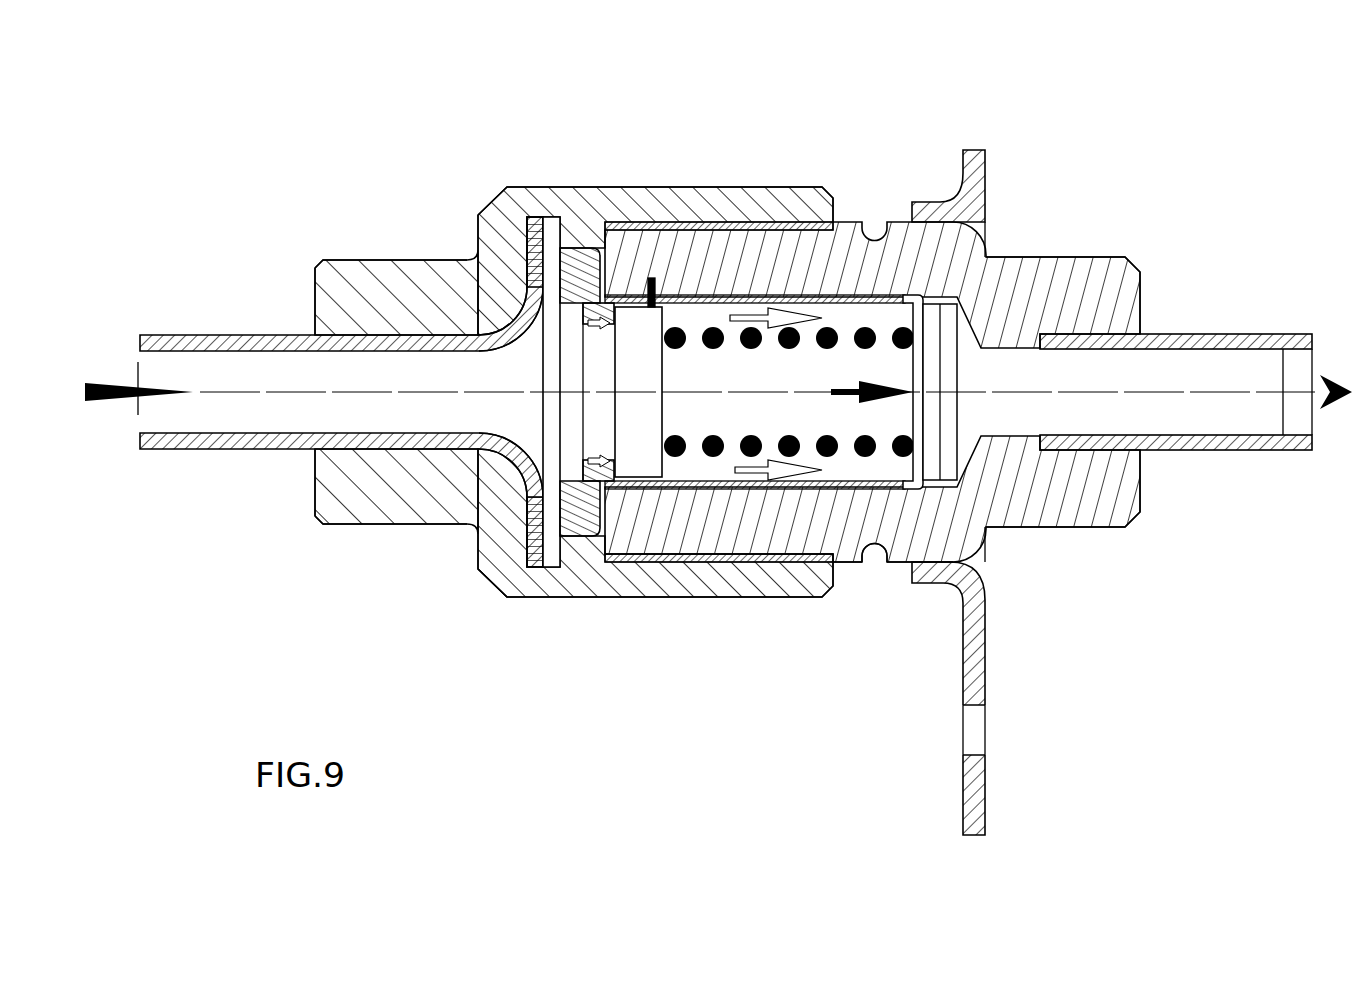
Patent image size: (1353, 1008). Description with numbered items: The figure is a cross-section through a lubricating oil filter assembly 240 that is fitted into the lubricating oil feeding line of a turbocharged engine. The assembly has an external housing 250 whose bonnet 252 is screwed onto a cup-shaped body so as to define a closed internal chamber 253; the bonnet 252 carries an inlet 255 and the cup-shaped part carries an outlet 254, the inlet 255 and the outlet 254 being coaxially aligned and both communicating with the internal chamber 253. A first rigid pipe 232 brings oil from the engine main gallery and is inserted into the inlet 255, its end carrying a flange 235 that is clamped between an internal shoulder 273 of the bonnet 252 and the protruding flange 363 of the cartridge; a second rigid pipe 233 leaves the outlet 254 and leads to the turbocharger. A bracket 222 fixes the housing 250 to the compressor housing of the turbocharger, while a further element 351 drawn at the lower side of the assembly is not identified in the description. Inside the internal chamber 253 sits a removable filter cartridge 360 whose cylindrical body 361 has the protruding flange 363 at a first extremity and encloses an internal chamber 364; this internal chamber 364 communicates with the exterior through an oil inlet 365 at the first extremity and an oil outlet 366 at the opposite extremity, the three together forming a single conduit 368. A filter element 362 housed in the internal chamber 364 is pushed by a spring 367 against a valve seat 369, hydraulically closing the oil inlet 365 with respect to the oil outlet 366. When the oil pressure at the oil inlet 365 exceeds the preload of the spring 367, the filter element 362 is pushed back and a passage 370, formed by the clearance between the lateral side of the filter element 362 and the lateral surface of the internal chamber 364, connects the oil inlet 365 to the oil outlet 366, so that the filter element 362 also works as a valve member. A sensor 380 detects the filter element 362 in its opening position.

The bracket 222 is at (983, 167).
The first rigid pipe 232 is at (228, 457).
The second rigid pipe 233 is at (1197, 333).
The flange 235 is at (535, 215).
The lubricating oil filter assembly 240 is at (290, 236).
The housing 250 is at (598, 180).
The bonnet 252 is at (597, 588).
The internal chamber 253 is at (930, 443).
The outlet 254 is at (1113, 457).
The inlet 255 is at (352, 320).
The internal shoulder 273 is at (518, 250).
The lower mounting flange 351 is at (935, 585).
The removable filter cartridge 360 is at (766, 495).
The body 361 is at (728, 300).
The filter element 362 is at (637, 327).
The protruding flange 363 is at (598, 565).
The internal chamber 364 is at (863, 562).
The oil inlet 365 is at (478, 540).
The oil outlet 366 is at (917, 372).
The spring 367 is at (841, 337).
The single conduit 368 is at (570, 410).
The valve seat 369 is at (556, 317).
The passage 370 is at (657, 500).
The sensor 380 is at (652, 278).